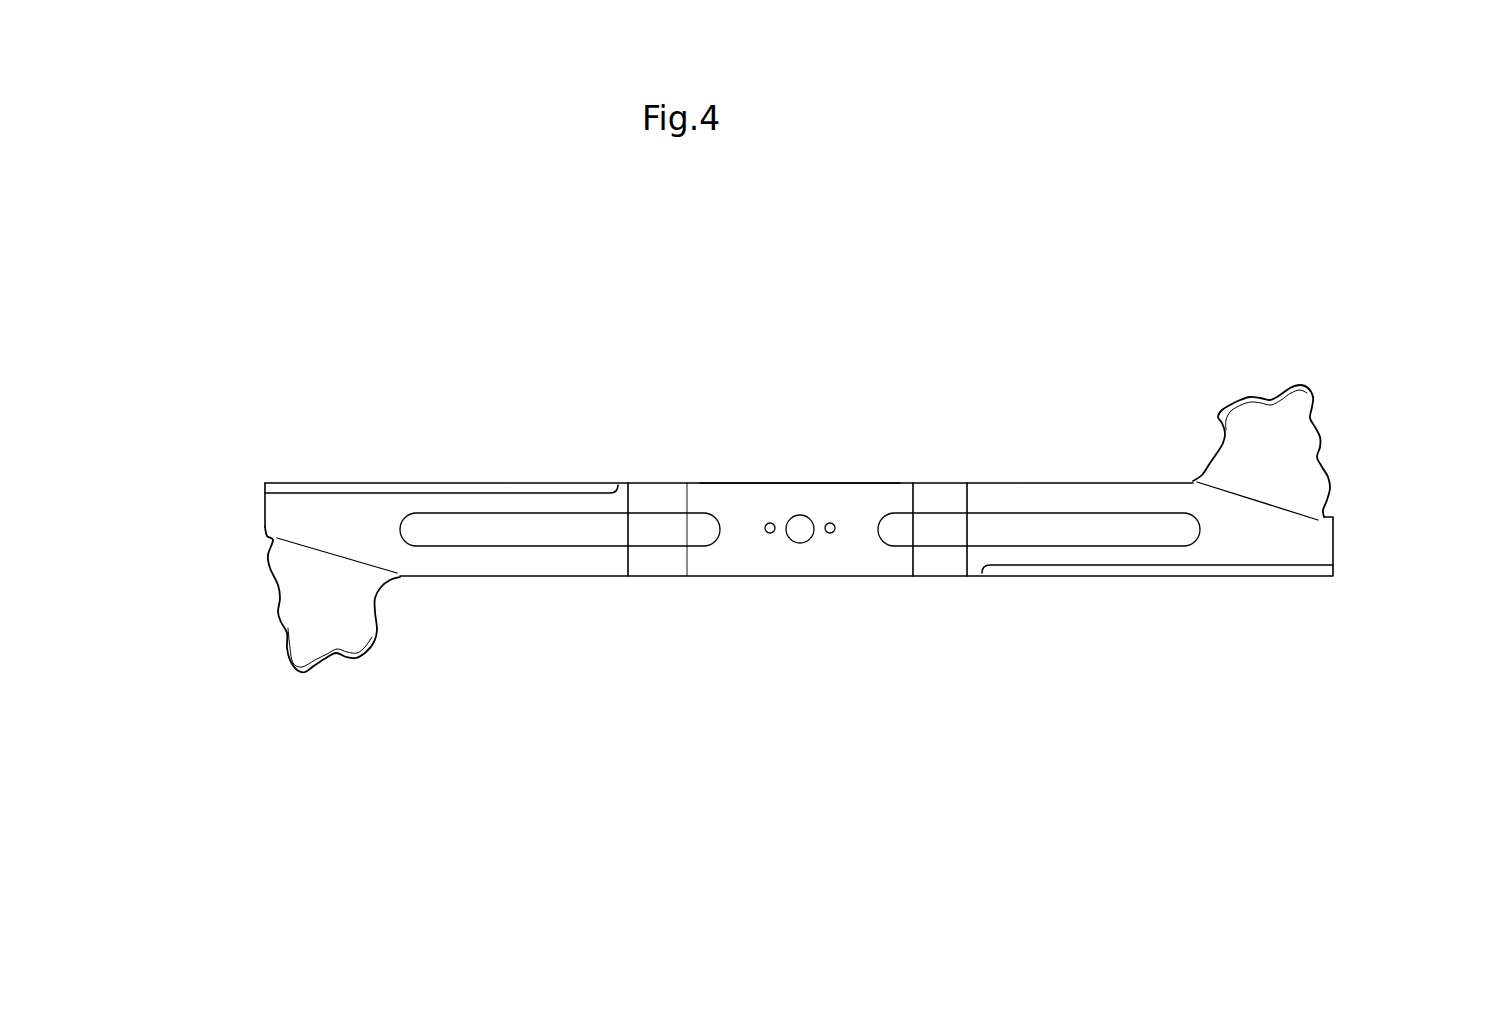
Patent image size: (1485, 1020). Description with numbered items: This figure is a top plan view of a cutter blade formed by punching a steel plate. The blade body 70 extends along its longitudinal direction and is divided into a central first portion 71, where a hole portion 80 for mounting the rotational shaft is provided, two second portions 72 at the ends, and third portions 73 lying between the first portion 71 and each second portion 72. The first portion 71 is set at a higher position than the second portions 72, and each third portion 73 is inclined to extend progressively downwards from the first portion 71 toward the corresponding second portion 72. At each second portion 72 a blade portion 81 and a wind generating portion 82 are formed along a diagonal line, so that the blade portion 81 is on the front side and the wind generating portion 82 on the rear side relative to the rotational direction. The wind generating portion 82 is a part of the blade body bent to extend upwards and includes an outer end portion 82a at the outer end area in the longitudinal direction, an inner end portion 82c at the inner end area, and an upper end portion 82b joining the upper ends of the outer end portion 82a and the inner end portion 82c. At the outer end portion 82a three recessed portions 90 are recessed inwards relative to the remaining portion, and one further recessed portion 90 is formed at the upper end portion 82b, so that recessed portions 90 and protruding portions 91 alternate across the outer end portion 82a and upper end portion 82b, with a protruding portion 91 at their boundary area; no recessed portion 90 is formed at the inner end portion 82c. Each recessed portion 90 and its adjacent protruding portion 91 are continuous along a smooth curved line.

The blade body 70 is at (984, 300).
The first portion 71 is at (873, 493).
The second portion 72 is at (1018, 493).
The third portion 73 is at (942, 492).
The hole portion 80 is at (800, 537).
The blade portion 81 is at (528, 487).
The wind generating portion 82 is at (412, 668).
The outer end portion 82a is at (213, 690).
The upper end portion 82b is at (398, 662).
The inner end portion 82c is at (390, 597).
The recessed portion 90 is at (268, 540).
The protruding portion 91 is at (265, 568).